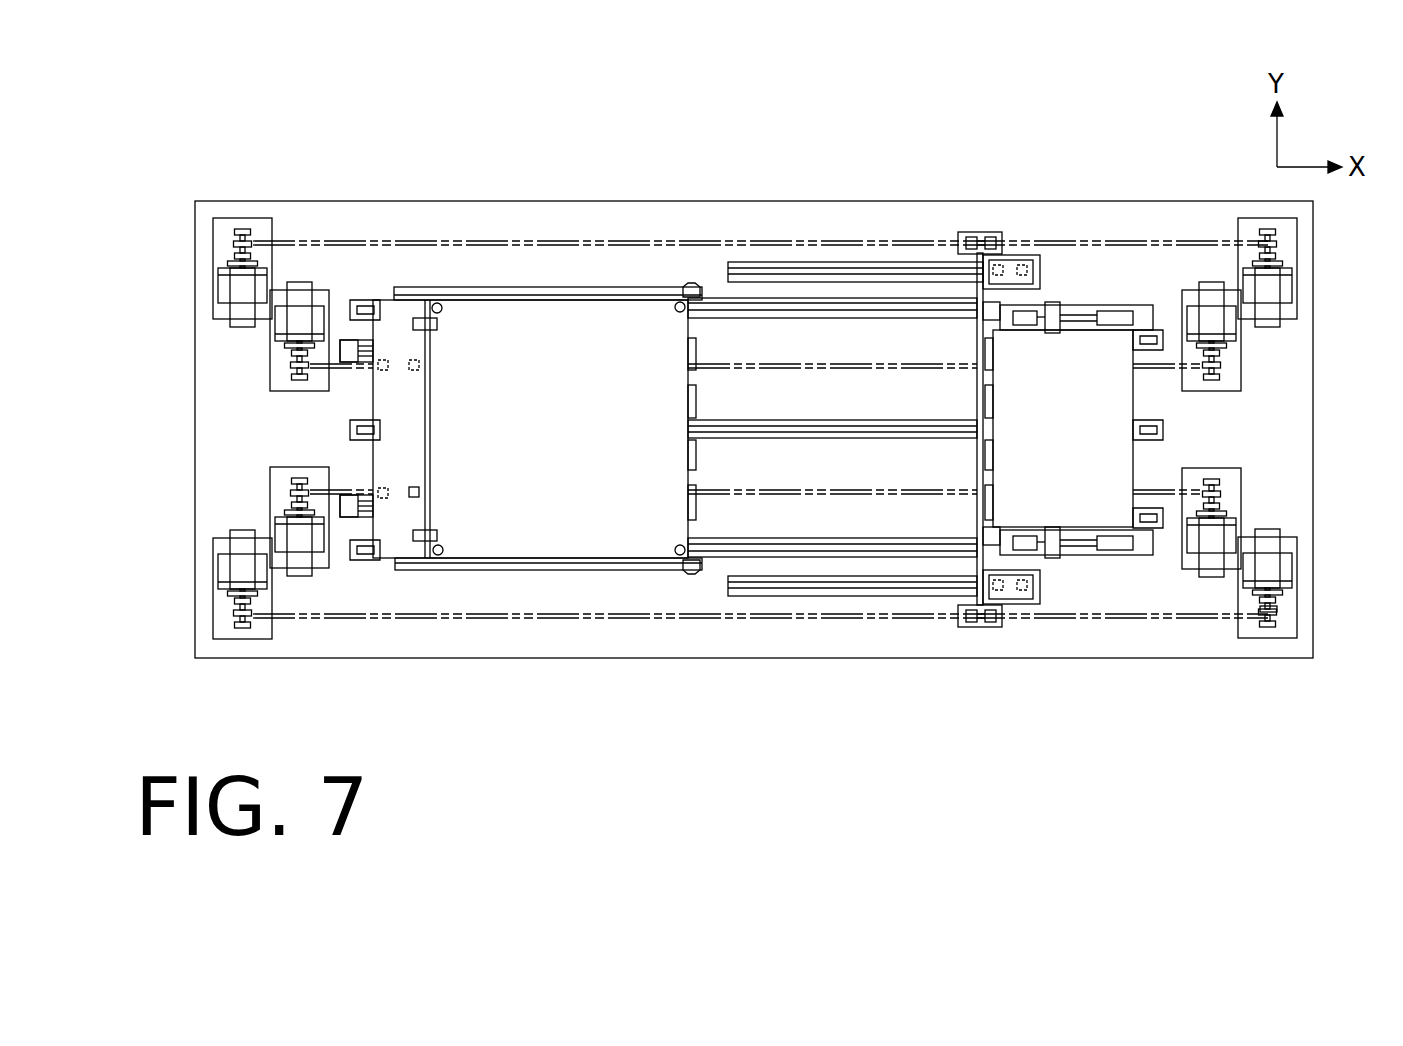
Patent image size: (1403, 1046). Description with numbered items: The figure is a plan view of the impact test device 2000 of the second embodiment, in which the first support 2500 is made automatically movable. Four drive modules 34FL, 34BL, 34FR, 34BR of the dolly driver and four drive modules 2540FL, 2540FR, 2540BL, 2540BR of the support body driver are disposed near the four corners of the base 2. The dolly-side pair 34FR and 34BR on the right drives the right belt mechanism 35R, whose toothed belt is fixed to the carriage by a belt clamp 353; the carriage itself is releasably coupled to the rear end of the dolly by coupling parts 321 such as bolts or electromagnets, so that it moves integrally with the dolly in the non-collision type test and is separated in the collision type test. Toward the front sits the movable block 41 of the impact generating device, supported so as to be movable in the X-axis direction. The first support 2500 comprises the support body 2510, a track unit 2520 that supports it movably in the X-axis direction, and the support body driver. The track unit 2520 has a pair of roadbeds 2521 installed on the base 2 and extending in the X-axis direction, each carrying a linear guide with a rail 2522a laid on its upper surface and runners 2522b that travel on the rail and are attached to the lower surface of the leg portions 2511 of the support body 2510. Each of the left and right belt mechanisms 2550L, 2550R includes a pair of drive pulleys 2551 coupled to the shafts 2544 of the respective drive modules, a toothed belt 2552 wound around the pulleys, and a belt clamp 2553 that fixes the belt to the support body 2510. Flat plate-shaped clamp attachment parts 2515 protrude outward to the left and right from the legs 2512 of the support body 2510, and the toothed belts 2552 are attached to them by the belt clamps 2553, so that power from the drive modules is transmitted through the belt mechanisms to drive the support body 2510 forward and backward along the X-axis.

The impact test device 2000 is at (275, 142).
The base 2 is at (640, 658).
The drive module 2540BL is at (250, 218).
The drive module 2540BR is at (237, 639).
The drive module 2540FL is at (1265, 218).
The drive module 2540FR is at (1295, 553).
The shaft 2544 is at (1268, 612).
The drive module 34BL is at (270, 346).
The drive module 34BR is at (270, 507).
The drive module 34FL is at (1240, 357).
The drive module 34FR is at (1240, 500).
The movable block 41 is at (1133, 400).
The coupling part 321 is at (445, 537).
The belt clamp 353 is at (403, 497).
The belt mechanism 35R is at (330, 500).
The first support 2500 is at (977, 226).
The support body 2510 is at (977, 330).
The leg portion 2511 is at (1042, 578).
The leg 2512 is at (977, 580).
The clamp attachment part 2515 is at (977, 628).
The track unit 2520 is at (928, 508).
The roadbed 2521 is at (880, 597).
The rail 2522a is at (800, 588).
The runner 2522b is at (1038, 590).
The belt mechanism 2550L is at (1152, 230).
The belt mechanism 2550R is at (1187, 712).
The drive pulley 2551 is at (1274, 612).
The toothed belt 2552 is at (1183, 620).
The belt clamp 2553 is at (1000, 628).